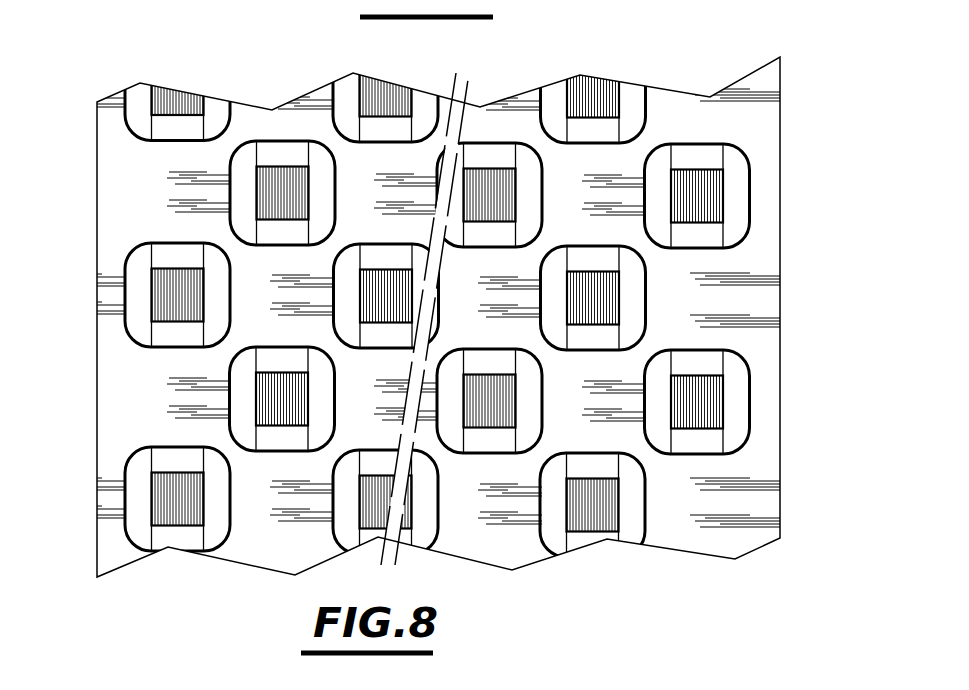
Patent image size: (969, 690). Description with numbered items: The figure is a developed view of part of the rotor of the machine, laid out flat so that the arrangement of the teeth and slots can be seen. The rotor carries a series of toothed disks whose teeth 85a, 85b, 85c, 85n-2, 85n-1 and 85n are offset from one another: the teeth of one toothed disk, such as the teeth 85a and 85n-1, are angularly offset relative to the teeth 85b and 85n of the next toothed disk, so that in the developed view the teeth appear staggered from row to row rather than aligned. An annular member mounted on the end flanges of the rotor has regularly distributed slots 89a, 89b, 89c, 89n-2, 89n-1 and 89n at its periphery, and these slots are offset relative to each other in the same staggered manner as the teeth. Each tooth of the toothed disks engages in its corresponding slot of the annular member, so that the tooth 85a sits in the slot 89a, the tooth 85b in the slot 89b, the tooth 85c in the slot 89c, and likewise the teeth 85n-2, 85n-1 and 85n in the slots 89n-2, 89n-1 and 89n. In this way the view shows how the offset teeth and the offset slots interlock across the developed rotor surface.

The tooth 85a is at (160, 297).
The tooth 85b is at (274, 172).
The tooth 85c is at (385, 283).
The tooth 85n-2 is at (492, 183).
The tooth 85n-1 is at (597, 88).
The tooth 85n is at (705, 203).
The slot 89a is at (132, 126).
The slot 89b is at (229, 398).
The slot 89c is at (333, 297).
The slot 89n-2 is at (542, 203).
The slot 89n-1 is at (647, 297).
The slot 89n is at (750, 178).